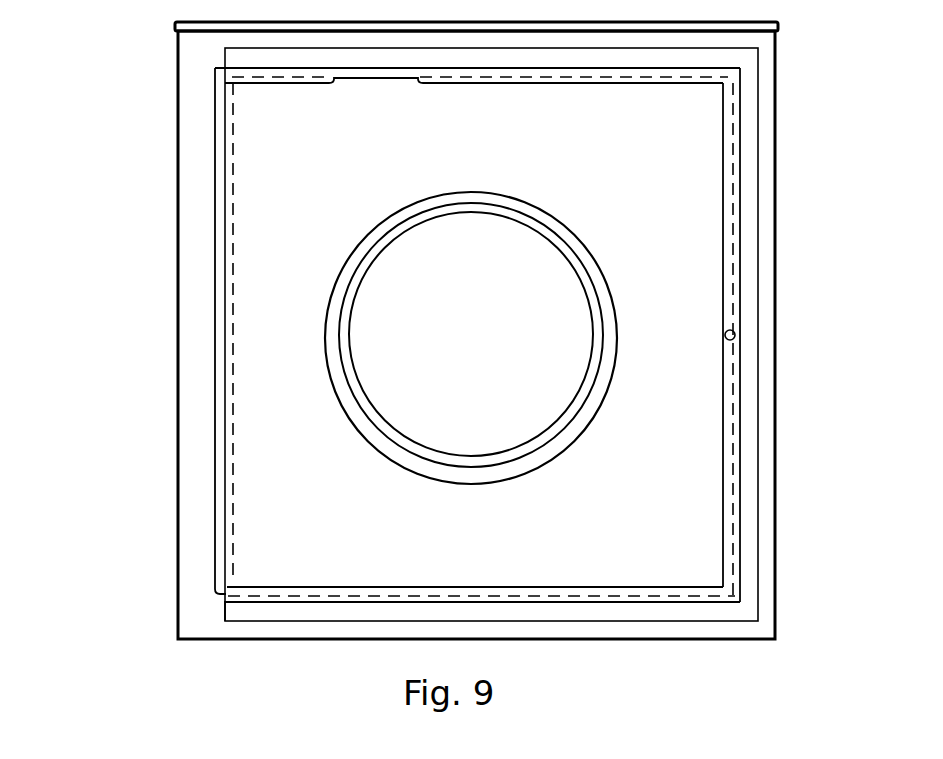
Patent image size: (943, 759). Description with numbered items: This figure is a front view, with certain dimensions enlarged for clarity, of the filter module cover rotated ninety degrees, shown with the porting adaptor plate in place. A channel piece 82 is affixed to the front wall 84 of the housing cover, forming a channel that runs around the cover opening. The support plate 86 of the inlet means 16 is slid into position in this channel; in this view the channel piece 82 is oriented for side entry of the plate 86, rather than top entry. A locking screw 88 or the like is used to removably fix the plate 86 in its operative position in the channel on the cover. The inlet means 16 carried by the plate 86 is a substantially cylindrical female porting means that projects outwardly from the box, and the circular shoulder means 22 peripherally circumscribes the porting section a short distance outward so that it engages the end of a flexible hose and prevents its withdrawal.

The female air flow porting means 16 is at (443, 492).
The shoulder means 22 is at (513, 196).
The channel piece 82 is at (747, 437).
The front wall 84 is at (767, 540).
The support plate 86 is at (225, 433).
The locking screw 88 is at (736, 329).